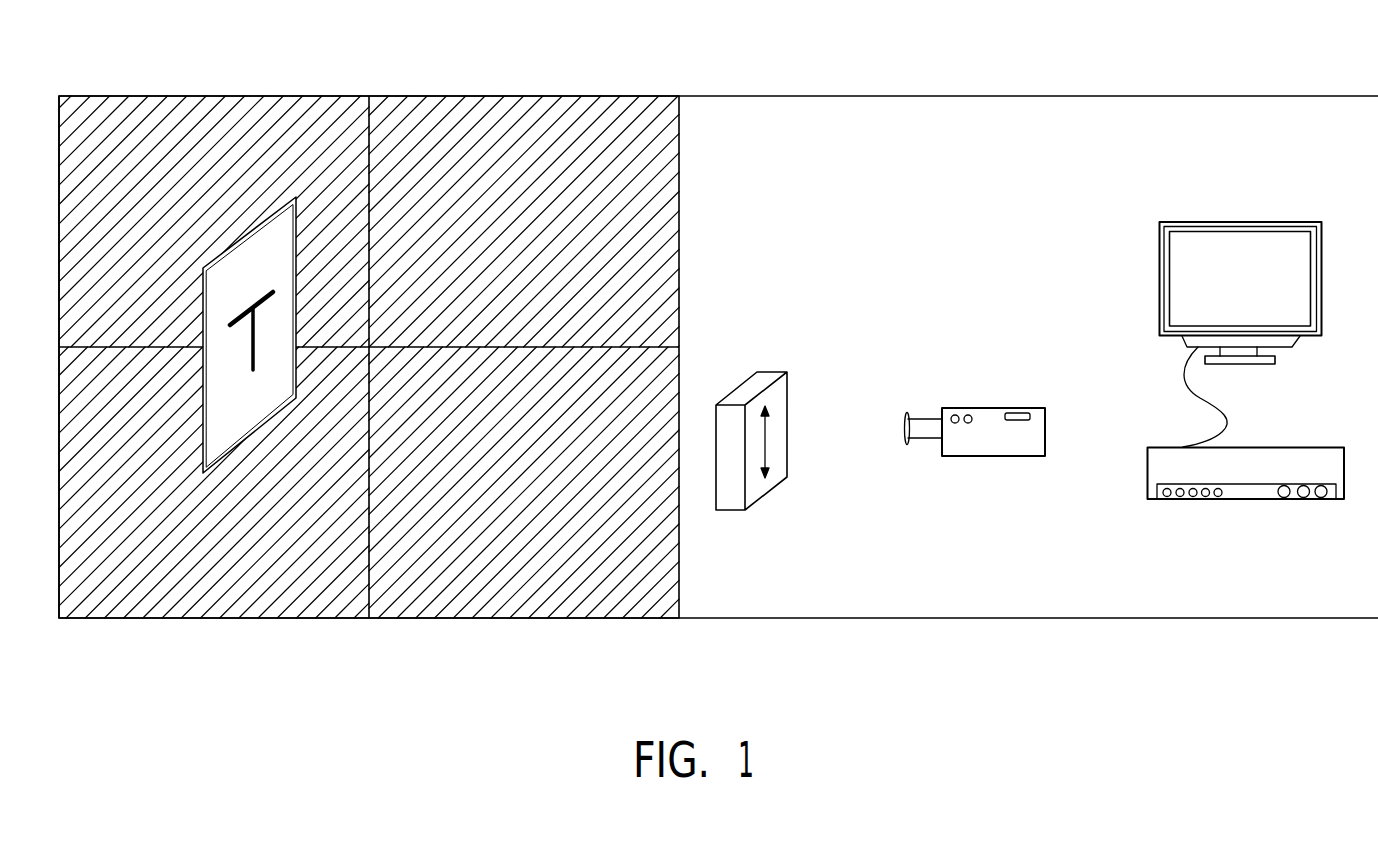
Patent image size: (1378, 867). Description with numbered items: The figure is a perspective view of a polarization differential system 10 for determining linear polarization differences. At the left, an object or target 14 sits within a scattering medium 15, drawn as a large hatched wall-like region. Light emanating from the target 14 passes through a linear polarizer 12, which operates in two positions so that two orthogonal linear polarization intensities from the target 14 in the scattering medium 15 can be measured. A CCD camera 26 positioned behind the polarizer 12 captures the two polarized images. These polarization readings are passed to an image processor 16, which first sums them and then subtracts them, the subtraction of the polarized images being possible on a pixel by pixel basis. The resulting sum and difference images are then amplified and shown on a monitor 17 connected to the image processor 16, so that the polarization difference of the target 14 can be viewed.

The system 10 is at (910, 189).
The linear polarizer 12 is at (740, 382).
The target 14 is at (249, 335).
The scattering medium 15 is at (467, 130).
The image processor 16 is at (1240, 499).
The monitor 17 is at (1228, 221).
The CCD camera 26 is at (985, 456).